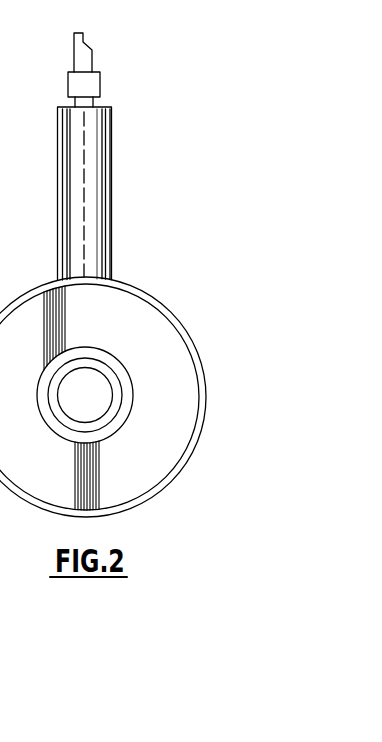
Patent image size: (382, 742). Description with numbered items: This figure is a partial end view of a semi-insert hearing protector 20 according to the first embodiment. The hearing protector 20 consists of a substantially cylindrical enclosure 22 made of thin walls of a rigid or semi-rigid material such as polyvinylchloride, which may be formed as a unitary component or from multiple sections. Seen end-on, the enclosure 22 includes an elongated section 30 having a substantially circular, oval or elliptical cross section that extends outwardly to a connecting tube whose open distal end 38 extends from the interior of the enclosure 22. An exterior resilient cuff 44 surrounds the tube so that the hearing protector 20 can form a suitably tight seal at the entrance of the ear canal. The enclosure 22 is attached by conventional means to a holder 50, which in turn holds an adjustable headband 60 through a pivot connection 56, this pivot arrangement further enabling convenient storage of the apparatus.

The hearing protector 20 is at (185, 224).
The enclosure 22 is at (188, 403).
The elongated section 30 is at (131, 377).
The open distal end 38 is at (73, 393).
The exterior resilient cuff 44 is at (92, 373).
The holder 50 is at (112, 160).
The pivot connection 56 is at (100, 82).
The adjustable headband 60 is at (88, 43).